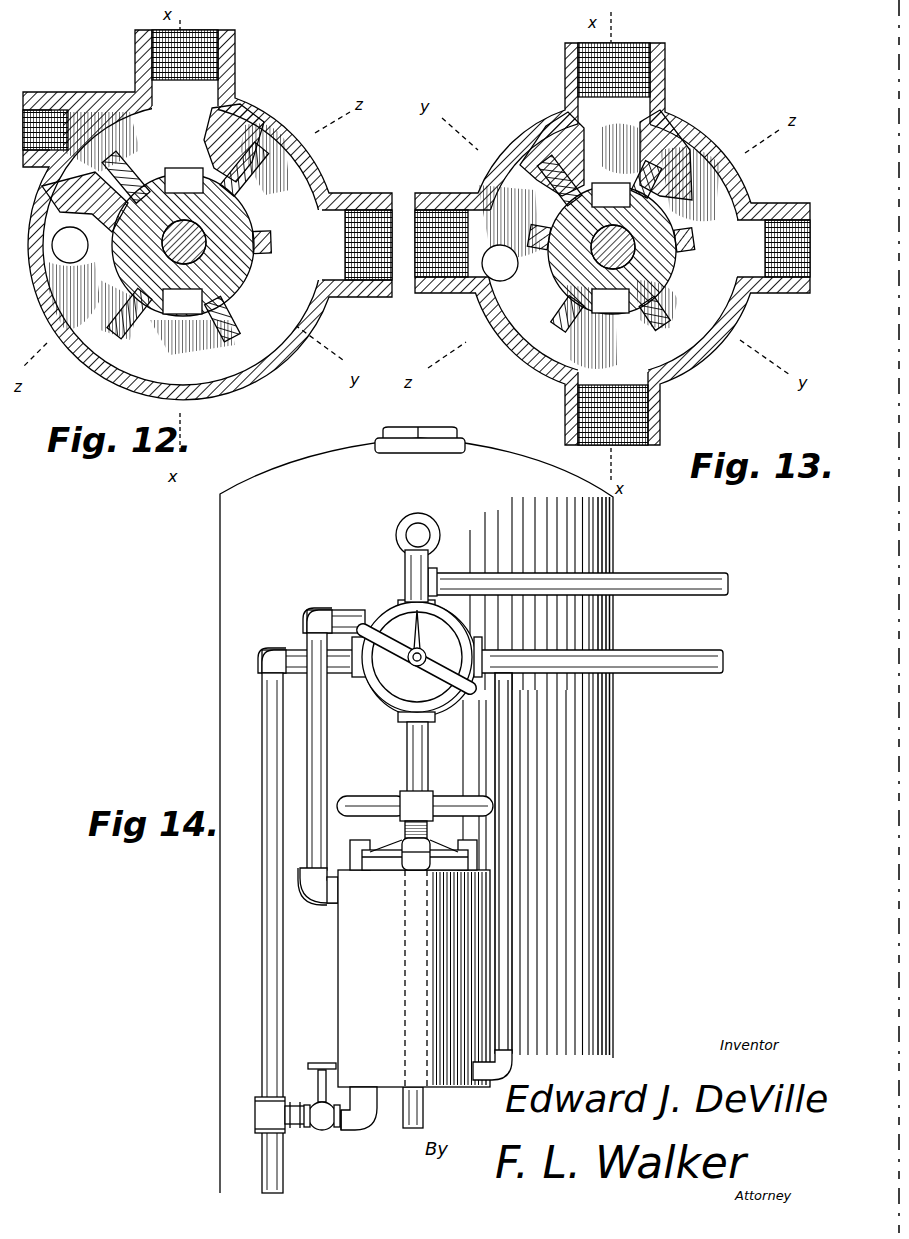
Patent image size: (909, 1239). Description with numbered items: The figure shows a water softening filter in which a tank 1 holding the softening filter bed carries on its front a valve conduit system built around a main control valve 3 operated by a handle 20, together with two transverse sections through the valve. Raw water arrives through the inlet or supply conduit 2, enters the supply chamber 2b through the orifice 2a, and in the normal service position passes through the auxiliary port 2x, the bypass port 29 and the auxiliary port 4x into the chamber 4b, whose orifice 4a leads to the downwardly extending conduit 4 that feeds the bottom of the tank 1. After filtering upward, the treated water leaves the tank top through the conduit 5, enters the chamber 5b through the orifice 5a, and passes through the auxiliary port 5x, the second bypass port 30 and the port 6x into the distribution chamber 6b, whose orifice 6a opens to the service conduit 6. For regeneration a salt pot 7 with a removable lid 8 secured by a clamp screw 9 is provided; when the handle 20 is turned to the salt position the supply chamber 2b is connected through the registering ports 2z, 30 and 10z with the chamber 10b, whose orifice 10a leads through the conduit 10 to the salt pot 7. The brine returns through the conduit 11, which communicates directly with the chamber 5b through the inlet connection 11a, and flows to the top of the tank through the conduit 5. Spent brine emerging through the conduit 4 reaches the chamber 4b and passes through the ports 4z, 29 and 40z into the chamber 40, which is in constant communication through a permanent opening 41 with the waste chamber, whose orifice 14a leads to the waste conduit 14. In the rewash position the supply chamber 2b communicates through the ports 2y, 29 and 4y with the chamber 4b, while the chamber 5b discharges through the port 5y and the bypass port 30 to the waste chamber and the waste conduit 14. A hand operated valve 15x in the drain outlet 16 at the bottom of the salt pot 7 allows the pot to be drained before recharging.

In FIG. 14, the tank 1 is at (220, 642).
In FIG. 14, the inlet or supply conduit 2 is at (648, 656).
In FIG. 12, the orifice 2a is at (370, 205).
In FIG. 12, the supply chamber 2b is at (207, 215).
In FIG. 12, the auxiliary port 2x is at (176, 322).
In FIG. 12, the port 2y is at (248, 285).
In FIG. 12, the port 2z is at (240, 200).
In FIG. 14, the main control valve 3 is at (450, 636).
In FIG. 14, the downwardly extending conduit 4 is at (430, 765).
In FIG. 13, the orifice 4a is at (440, 292).
In FIG. 13, the valve chamber 4b is at (591, 254).
In FIG. 13, the auxiliary port 4x is at (617, 320).
In FIG. 13, the port 4y is at (558, 205).
In FIG. 13, the port 4z is at (543, 336).
In FIG. 14, the conduit 5 is at (404, 572).
In FIG. 12, the orifice 5a is at (195, 60).
In FIG. 12, the valve chamber 5b is at (155, 119).
In FIG. 12, the auxiliary port 5x is at (183, 166).
In FIG. 12, the port 5y is at (115, 202).
In FIG. 14, the service conduit 6 is at (550, 574).
In FIG. 13, the orifice 6a is at (645, 42).
In FIG. 13, the distribution chamber 6b is at (602, 116).
In FIG. 13, the auxiliary port 6x is at (618, 178).
In FIG. 14, the salt pot 7 is at (466, 920).
In FIG. 14, the removable lid 8 is at (428, 862).
In FIG. 14, the clamp screw 9 is at (428, 830).
In FIG. 14, the conduit 10 is at (512, 753).
In FIG. 13, the orifice 10a is at (790, 215).
In FIG. 13, the valve chamber 10b is at (612, 244).
In FIG. 13, the port 10z is at (670, 210).
In FIG. 14, the brine return conduit 11 is at (320, 779).
In FIG. 12, the orifice 11a is at (40, 95).
In FIG. 14, the orifice 11a is at (382, 607).
In FIG. 14, the waste conduit 14 is at (262, 1030).
In FIG. 12, the orifice 14a is at (403, 319).
In FIG. 14, the hand operated valve 15x is at (322, 1132).
In FIG. 14, the drain outlet 16 is at (368, 1128).
In FIG. 14, the handle 20 is at (368, 672).
In FIG. 12, the bypass port 29 is at (182, 301).
In FIG. 13, the bypass port 29 is at (610, 301).
In FIG. 12, the bypass port 30 is at (184, 180).
In FIG. 13, the bypass port 30 is at (611, 195).
In FIG. 12, the chamber 40 is at (173, 242).
In FIG. 12, the port 40z is at (118, 292).
In FIG. 12, the permanent opening 41 is at (70, 245).
In FIG. 13, the permanent opening 41 is at (500, 263).